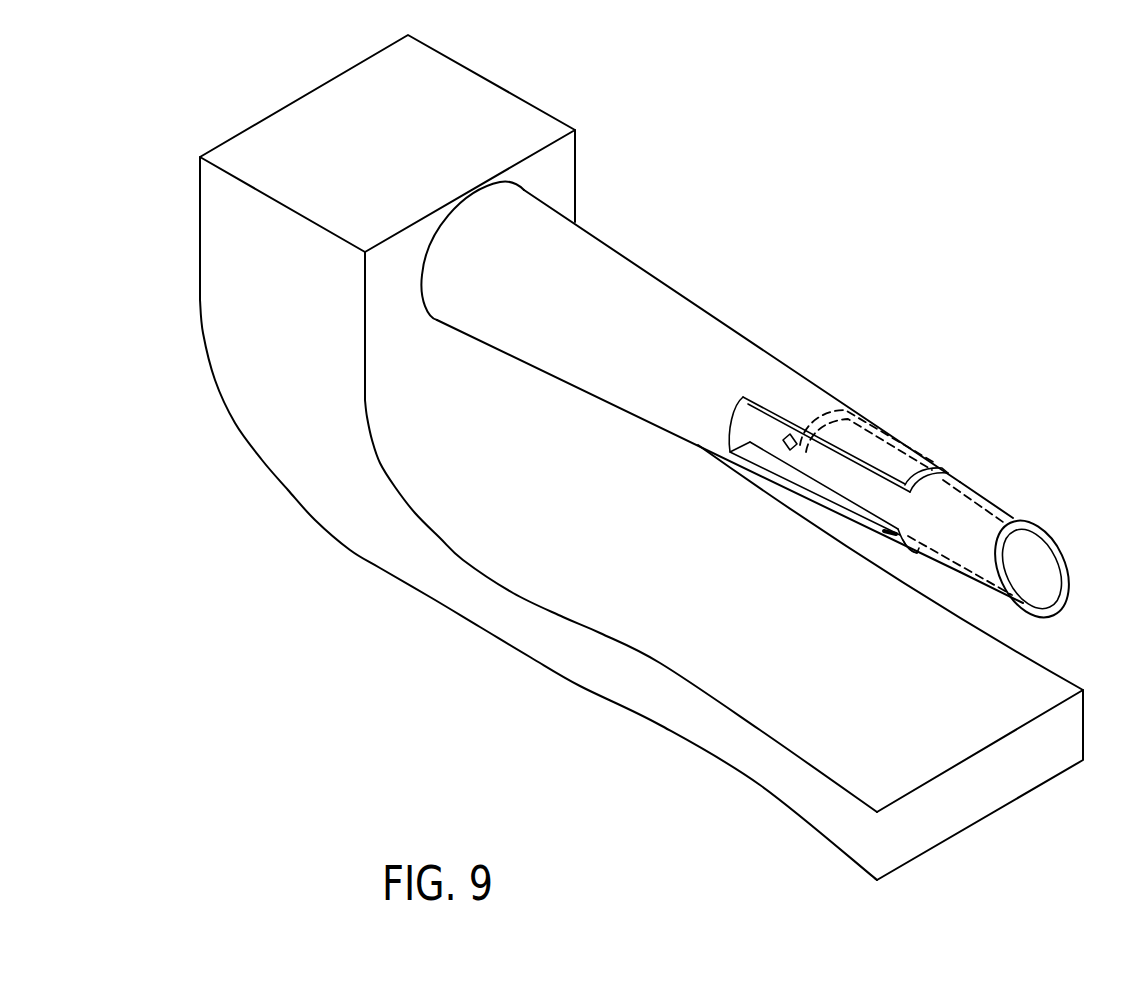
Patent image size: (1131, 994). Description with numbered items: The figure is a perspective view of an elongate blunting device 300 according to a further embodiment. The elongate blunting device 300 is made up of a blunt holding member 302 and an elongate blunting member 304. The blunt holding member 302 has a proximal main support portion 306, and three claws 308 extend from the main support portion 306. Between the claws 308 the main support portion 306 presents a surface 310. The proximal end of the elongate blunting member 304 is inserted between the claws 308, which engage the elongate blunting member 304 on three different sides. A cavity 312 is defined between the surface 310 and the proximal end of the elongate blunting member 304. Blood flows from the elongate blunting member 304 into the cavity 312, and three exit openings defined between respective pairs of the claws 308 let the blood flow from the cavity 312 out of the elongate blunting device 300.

The elongate blunting device 300 is at (805, 260).
The blunt holding member 302 is at (690, 376).
The elongate blunting member 304 is at (977, 520).
The main support portion 306 is at (665, 308).
The claws 308 is at (868, 447).
The surface 310 is at (755, 423).
The cavity 312 is at (783, 460).